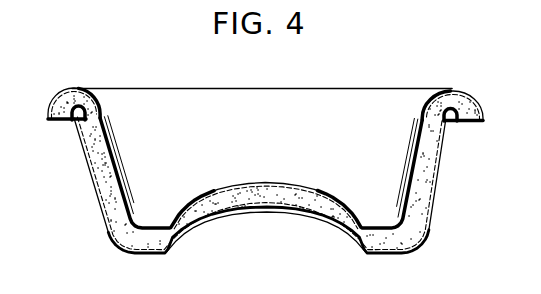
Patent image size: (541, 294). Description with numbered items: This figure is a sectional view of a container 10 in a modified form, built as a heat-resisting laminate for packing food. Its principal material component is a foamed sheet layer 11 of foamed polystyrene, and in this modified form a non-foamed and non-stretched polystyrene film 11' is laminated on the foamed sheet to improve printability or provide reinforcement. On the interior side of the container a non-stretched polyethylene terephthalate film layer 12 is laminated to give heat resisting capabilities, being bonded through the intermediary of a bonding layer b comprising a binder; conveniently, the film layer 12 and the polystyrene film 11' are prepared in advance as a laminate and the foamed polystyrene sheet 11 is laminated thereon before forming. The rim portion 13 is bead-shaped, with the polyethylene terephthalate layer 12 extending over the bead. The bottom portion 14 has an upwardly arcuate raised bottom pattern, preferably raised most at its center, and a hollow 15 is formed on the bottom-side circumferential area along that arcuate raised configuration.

The container 10 is at (228, 88).
The foamed sheet layer 11 is at (266, 172).
The non-foamed and non-stretched polystyrene film 11' is at (281, 188).
The non-stretched polyethylene terephthalate film layer 12 is at (422, 112).
The rim portion 13 is at (470, 110).
The bottom portion 14 is at (257, 177).
The hollow 15 is at (262, 216).
The bonding layer b is at (440, 134).